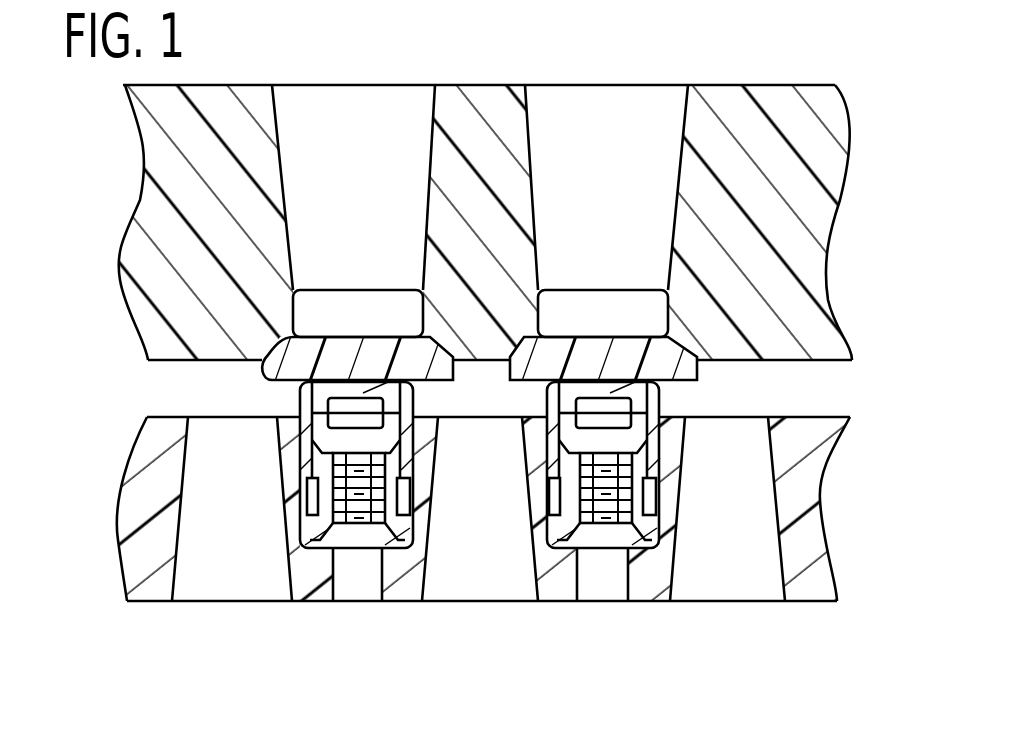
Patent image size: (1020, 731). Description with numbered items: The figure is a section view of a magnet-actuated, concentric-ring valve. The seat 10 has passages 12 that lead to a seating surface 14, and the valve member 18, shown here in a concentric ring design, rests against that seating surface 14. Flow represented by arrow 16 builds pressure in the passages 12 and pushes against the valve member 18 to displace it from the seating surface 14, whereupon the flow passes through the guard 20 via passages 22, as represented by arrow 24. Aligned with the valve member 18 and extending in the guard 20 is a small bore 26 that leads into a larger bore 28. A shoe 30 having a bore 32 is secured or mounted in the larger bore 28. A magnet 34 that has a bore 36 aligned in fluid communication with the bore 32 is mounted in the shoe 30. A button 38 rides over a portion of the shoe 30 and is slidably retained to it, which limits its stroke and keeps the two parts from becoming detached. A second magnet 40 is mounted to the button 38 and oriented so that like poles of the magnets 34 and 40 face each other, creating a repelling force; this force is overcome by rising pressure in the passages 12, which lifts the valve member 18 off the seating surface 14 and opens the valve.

The seat 10 is at (746, 84).
The passages 12 is at (688, 112).
The seating surface 14 is at (265, 362).
The arrow 16 is at (357, 115).
The valve member 18 is at (283, 385).
The guard 20 is at (797, 545).
The passages 22 is at (184, 465).
The arrow 24 is at (223, 568).
The small bore 26 is at (622, 578).
The larger bore 28 is at (398, 442).
The shoe 30 is at (318, 562).
The bore 32 is at (318, 545).
The magnet 34 is at (620, 473).
The bore 36 is at (645, 489).
The button 38 is at (361, 386).
The magnet 40 is at (605, 388).